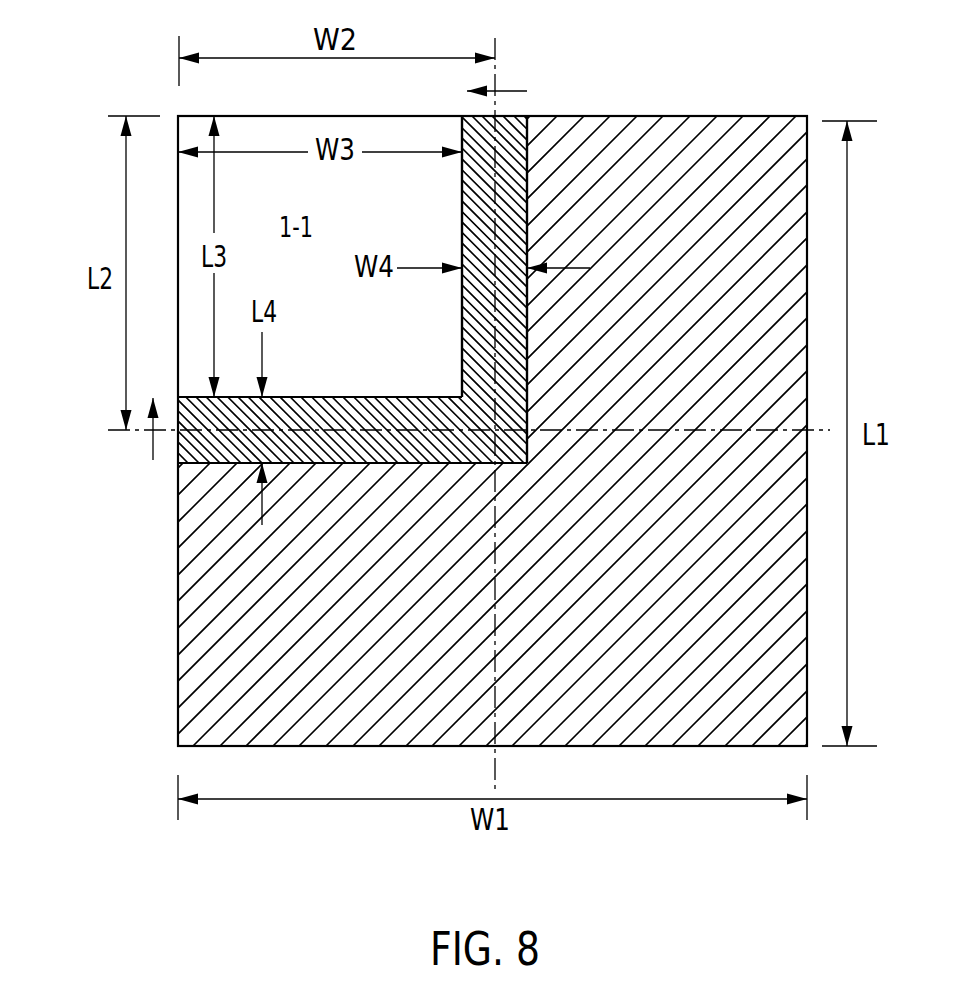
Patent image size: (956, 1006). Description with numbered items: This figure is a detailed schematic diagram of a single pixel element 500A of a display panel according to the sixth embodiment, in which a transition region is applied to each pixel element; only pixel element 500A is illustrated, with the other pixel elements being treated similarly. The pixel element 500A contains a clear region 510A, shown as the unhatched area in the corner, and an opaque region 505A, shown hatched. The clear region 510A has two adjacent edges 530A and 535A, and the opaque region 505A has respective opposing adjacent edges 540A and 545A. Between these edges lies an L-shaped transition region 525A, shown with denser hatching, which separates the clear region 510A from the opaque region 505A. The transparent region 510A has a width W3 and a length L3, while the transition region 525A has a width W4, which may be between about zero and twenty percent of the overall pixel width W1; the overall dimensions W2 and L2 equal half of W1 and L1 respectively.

The pixel element 500A is at (177, 599).
The opaque region 505A is at (672, 725).
The clear region 510A is at (382, 379).
The transition region 525A is at (510, 132).
The edge of clear region 530A is at (343, 397).
The edge of clear region 535A is at (462, 185).
The edge of opaque region 540A is at (245, 462).
The edge of opaque region 545A is at (527, 212).